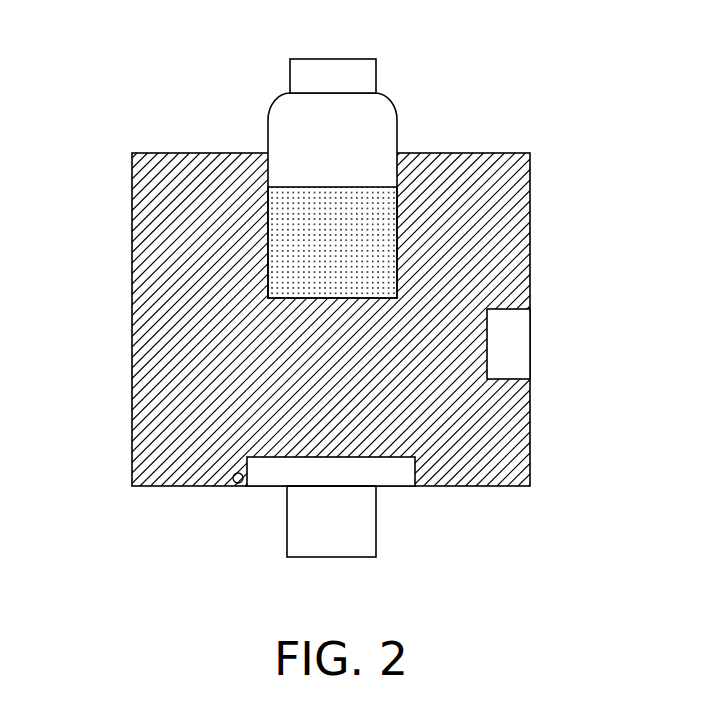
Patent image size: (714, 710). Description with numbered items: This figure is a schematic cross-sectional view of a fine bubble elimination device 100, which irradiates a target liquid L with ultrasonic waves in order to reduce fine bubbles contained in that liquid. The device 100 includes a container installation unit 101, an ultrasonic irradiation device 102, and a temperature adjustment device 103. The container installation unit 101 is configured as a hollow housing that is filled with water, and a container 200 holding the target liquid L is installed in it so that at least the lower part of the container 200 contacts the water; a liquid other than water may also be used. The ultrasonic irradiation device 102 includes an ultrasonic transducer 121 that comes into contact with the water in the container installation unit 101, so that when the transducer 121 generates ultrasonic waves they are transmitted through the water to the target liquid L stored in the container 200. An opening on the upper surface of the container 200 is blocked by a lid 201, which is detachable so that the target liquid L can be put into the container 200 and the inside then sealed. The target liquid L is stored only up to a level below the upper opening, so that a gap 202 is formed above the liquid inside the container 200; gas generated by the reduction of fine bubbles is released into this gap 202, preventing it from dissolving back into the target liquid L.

The fine bubble elimination device 100 is at (615, 150).
The container installation unit 101 is at (133, 442).
The ultrasonic irradiation device 102 is at (376, 525).
The temperature adjustment device 103 is at (530, 341).
The ultrasonic transducer 121 is at (238, 483).
The container 200 is at (281, 164).
The lid 201 is at (290, 73).
The gap 202 is at (268, 125).
The target liquid L is at (275, 222).